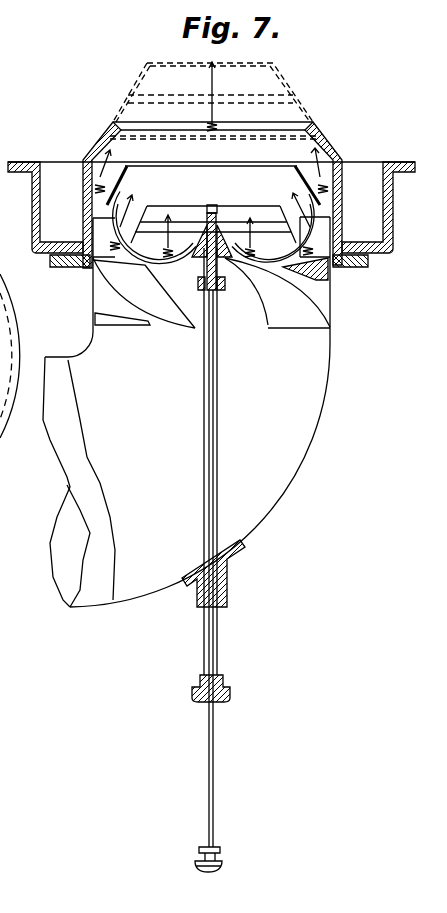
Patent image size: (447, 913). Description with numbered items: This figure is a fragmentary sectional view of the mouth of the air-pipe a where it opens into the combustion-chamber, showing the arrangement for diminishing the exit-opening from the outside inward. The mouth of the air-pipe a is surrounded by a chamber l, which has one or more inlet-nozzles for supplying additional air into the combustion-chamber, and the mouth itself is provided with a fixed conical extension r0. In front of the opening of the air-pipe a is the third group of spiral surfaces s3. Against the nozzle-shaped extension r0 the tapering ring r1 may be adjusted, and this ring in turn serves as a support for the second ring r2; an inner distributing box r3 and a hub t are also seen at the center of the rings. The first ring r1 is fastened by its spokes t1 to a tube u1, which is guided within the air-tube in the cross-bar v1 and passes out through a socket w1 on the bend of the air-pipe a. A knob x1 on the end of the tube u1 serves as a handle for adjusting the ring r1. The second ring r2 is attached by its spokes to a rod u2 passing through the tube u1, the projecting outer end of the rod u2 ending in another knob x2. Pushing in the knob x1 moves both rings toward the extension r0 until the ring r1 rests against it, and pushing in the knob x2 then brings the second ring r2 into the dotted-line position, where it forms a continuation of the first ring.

The air-pipe a is at (262, 498).
The chamber l is at (383, 208).
The fixed conical extension r0 is at (332, 150).
The tapering ring r1 is at (122, 185).
The second ring r2 is at (289, 228).
The inner distributing box r3 is at (160, 225).
The valve hub / cone t is at (162, 276).
The spokes t1 is at (306, 245).
The spiral surfaces s3 is at (163, 311).
The cross-bar v1 is at (246, 291).
The tube u1 is at (215, 450).
The rod u2 is at (213, 373).
The socket w1 is at (227, 582).
The knob x1 is at (230, 694).
The knob x2 is at (220, 857).